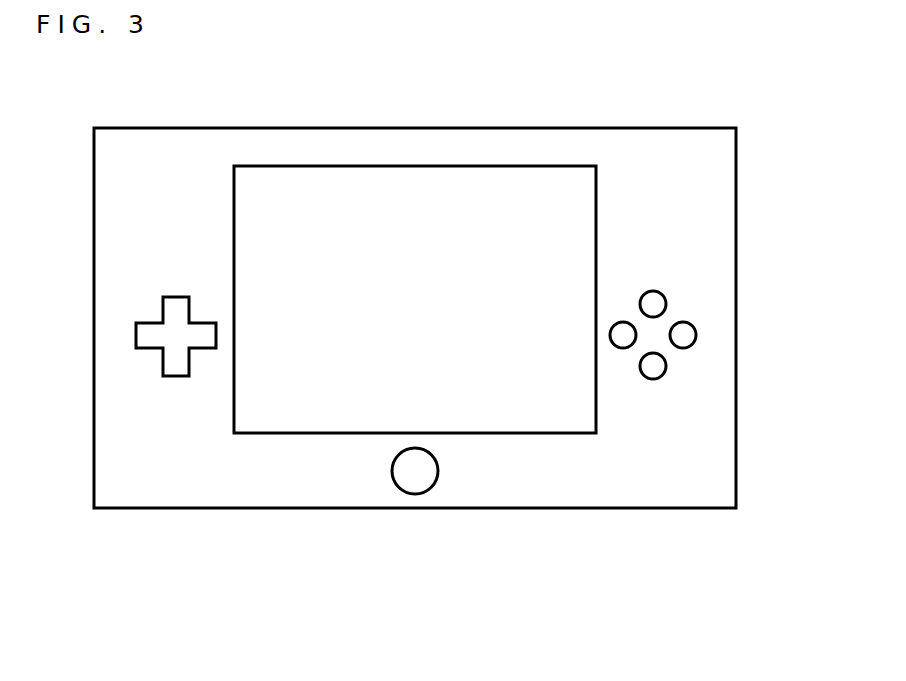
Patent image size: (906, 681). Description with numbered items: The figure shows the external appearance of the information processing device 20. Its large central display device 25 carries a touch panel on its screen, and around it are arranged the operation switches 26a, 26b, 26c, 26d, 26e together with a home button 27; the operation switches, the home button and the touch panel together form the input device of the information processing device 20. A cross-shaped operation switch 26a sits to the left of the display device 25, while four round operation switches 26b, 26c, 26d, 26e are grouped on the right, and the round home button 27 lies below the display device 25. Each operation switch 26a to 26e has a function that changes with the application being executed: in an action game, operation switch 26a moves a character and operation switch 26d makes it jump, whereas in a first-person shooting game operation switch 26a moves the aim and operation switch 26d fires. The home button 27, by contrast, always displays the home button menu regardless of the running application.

The information processing device 20 is at (445, 129).
The display device 25 is at (525, 425).
The operation switch 26a is at (177, 337).
The operation switch 26b is at (657, 304).
The operation switch 26c is at (623, 335).
The operation switch 26d is at (683, 335).
The operation switch 26e is at (653, 369).
The home button 27 is at (418, 475).